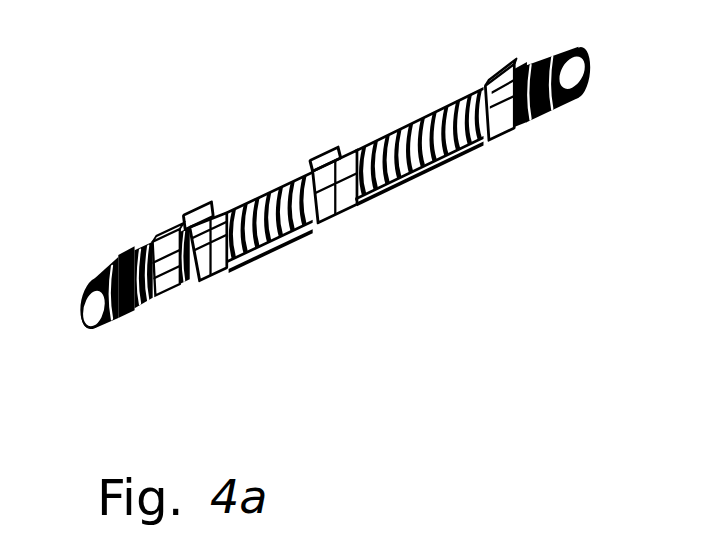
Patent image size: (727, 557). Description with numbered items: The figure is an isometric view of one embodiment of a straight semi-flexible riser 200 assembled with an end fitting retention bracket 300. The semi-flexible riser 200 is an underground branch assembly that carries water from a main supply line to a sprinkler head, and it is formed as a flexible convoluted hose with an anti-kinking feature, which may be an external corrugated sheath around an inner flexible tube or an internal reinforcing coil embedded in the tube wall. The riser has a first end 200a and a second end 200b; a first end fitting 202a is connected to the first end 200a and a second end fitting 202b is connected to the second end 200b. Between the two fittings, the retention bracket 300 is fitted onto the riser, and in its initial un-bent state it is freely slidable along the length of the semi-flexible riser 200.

The semi-flexible riser 200 is at (404, 189).
The first end 200a is at (166, 215).
The second end 200b is at (478, 81).
The first end fitting 202a is at (142, 237).
The second end fitting 202b is at (521, 124).
The end fitting retention bracket 300 is at (300, 245).